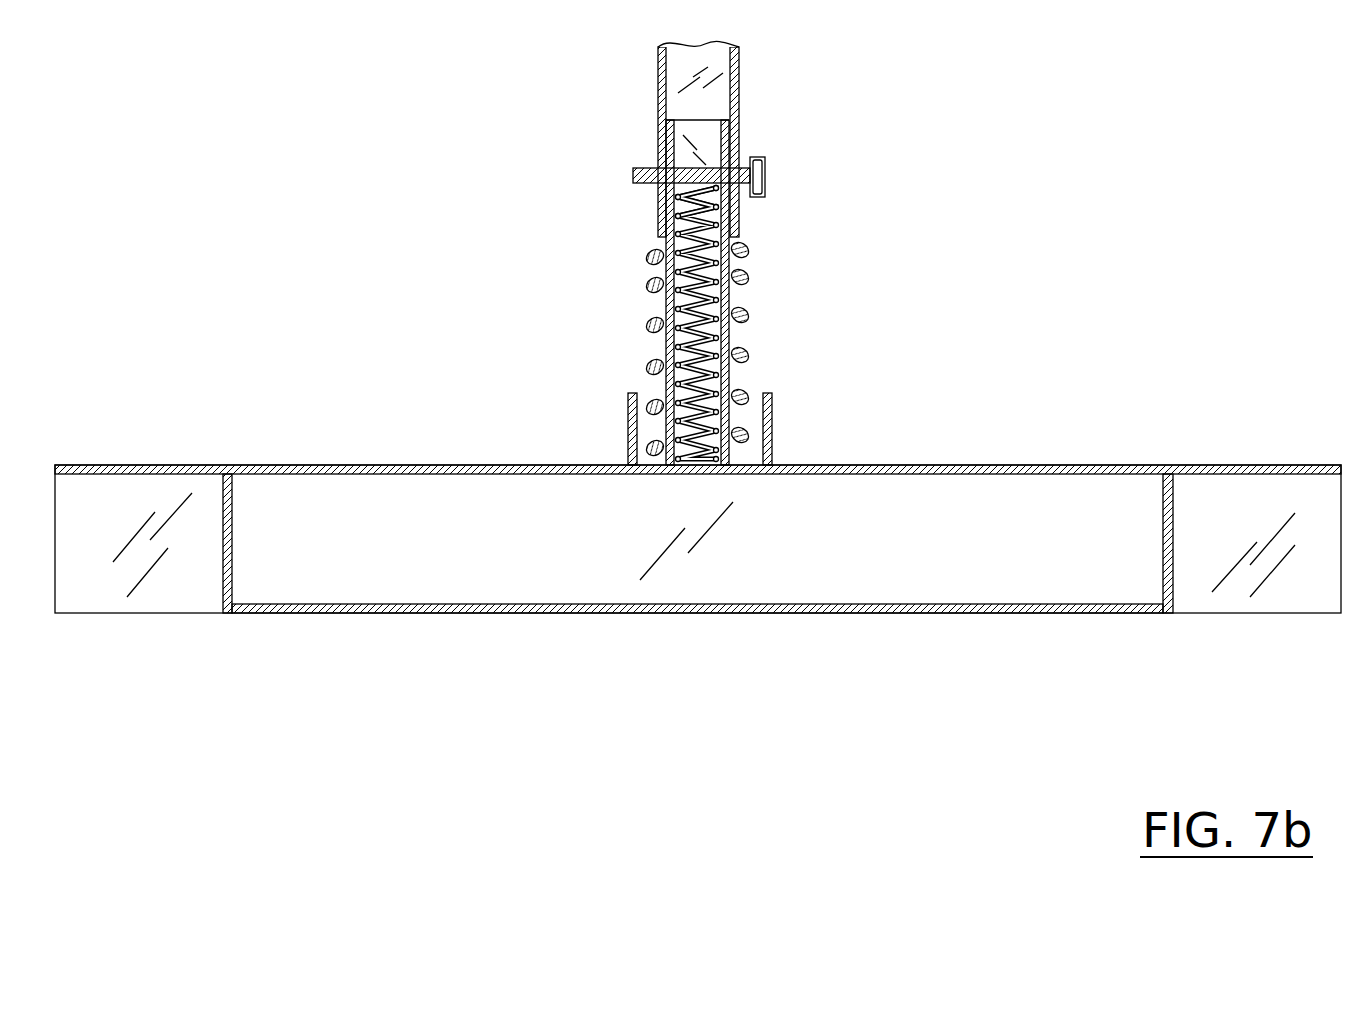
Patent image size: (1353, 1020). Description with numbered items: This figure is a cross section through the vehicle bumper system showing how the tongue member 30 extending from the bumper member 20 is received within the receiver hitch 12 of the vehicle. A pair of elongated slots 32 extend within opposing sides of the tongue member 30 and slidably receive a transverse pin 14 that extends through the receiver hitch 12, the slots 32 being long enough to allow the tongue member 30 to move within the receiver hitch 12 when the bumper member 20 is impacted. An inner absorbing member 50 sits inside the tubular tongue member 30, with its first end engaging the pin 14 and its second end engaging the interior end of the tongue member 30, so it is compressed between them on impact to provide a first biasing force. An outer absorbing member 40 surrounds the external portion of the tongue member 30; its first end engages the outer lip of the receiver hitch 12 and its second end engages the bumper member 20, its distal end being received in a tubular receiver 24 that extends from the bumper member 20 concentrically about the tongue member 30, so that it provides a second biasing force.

The receiver hitch 12 is at (735, 93).
The pin 14 is at (638, 168).
The bumper member 20 is at (868, 587).
The tubular receiver 24 is at (760, 393).
The tongue member 30 is at (665, 300).
The slots 32 is at (723, 215).
The outer absorbing member 40 is at (748, 283).
The inner absorbing member 50 is at (680, 217).